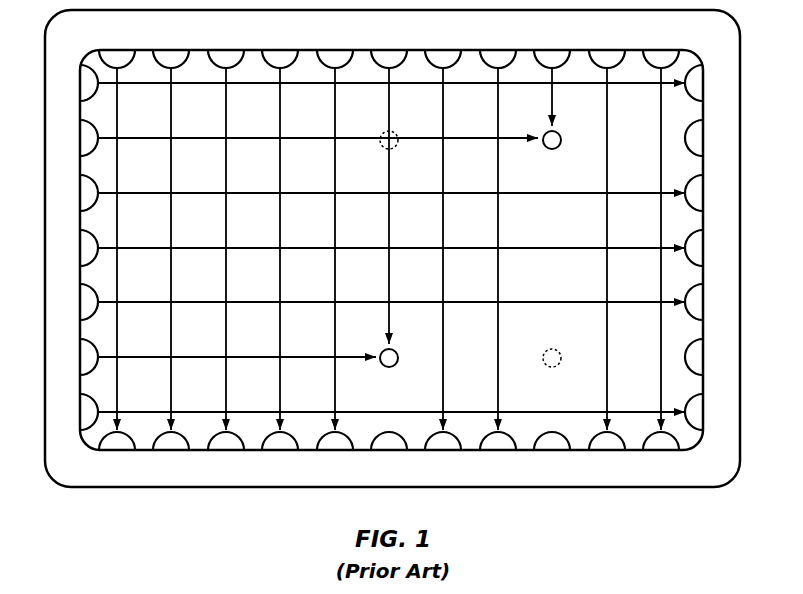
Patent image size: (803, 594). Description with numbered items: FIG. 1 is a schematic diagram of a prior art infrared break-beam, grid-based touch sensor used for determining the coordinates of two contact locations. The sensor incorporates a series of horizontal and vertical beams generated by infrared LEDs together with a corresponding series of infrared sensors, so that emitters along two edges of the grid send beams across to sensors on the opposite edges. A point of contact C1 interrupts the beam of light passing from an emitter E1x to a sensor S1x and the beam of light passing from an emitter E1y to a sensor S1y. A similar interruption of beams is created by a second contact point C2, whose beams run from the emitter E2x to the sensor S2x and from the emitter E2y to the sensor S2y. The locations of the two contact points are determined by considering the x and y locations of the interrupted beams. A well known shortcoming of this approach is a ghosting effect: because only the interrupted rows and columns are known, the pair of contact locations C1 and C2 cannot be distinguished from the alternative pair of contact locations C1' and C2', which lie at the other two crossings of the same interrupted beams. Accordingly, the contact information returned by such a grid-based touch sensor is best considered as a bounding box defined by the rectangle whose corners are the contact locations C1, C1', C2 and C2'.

The emitter E1x is at (389, 180).
The emitter E2x is at (552, 71).
The emitter E1y is at (213, 357).
The emitter E2y is at (294, 138).
The sensor S1x is at (390, 457).
The sensor S2x is at (554, 457).
The sensor S1y is at (712, 357).
The sensor S2y is at (713, 139).
The contact point C1 is at (404, 360).
The contact point C2 is at (566, 144).
The contact location C1' is at (568, 360).
The contact location C2' is at (403, 154).